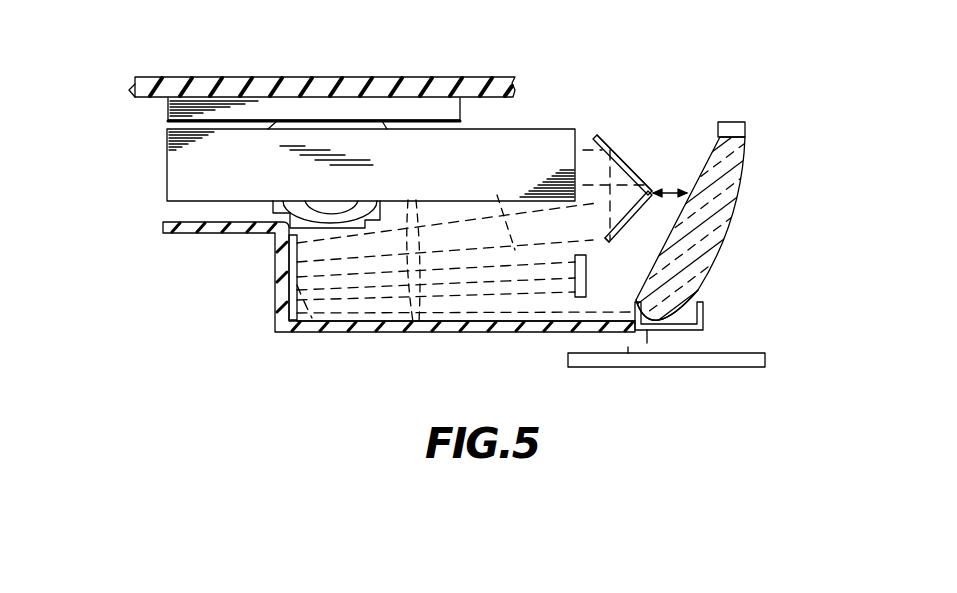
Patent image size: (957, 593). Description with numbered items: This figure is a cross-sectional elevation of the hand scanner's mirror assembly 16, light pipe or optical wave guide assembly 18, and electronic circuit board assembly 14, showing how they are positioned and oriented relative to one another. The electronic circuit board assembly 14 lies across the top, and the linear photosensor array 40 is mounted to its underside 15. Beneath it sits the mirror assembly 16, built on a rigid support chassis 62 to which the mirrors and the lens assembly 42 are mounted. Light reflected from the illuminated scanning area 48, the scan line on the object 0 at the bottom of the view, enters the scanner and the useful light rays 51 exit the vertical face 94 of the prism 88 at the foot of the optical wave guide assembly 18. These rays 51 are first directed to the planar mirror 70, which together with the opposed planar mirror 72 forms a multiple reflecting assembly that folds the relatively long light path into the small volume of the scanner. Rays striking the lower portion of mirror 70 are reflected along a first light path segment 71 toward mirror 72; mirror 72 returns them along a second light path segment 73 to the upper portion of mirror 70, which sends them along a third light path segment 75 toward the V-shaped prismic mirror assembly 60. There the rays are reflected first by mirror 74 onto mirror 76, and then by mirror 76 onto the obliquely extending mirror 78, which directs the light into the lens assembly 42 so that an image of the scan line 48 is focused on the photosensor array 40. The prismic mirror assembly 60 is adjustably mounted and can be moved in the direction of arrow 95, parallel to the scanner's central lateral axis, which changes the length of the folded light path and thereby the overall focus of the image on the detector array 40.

The electronic circuit board assembly 14 is at (333, 76).
The underside of electronic circuit board assembly 15 is at (135, 101).
The linear photosensor array 40 is at (168, 111).
The lens assembly 42 is at (262, 200).
The mirror 78 is at (566, 136).
The second light path segment 73 is at (410, 200).
The third light path segment 75 is at (497, 196).
The prismic mirror assembly 60 is at (610, 140).
The mirror 76 is at (630, 160).
The arrow 95 is at (673, 190).
The optical wave guide assembly 18 is at (740, 201).
The prism 88 is at (698, 290).
The mirror 74 is at (632, 258).
The vertical face of prism 94 is at (635, 303).
The illuminated scanning area 48 is at (655, 346).
The mirror assembly 16 is at (275, 268).
The support chassis 62 is at (275, 311).
The mirror 70 is at (300, 293).
The first light path segment 71 is at (414, 325).
The mirror 72 is at (567, 290).
The light rays 51 is at (566, 322).
The object 0 is at (735, 368).